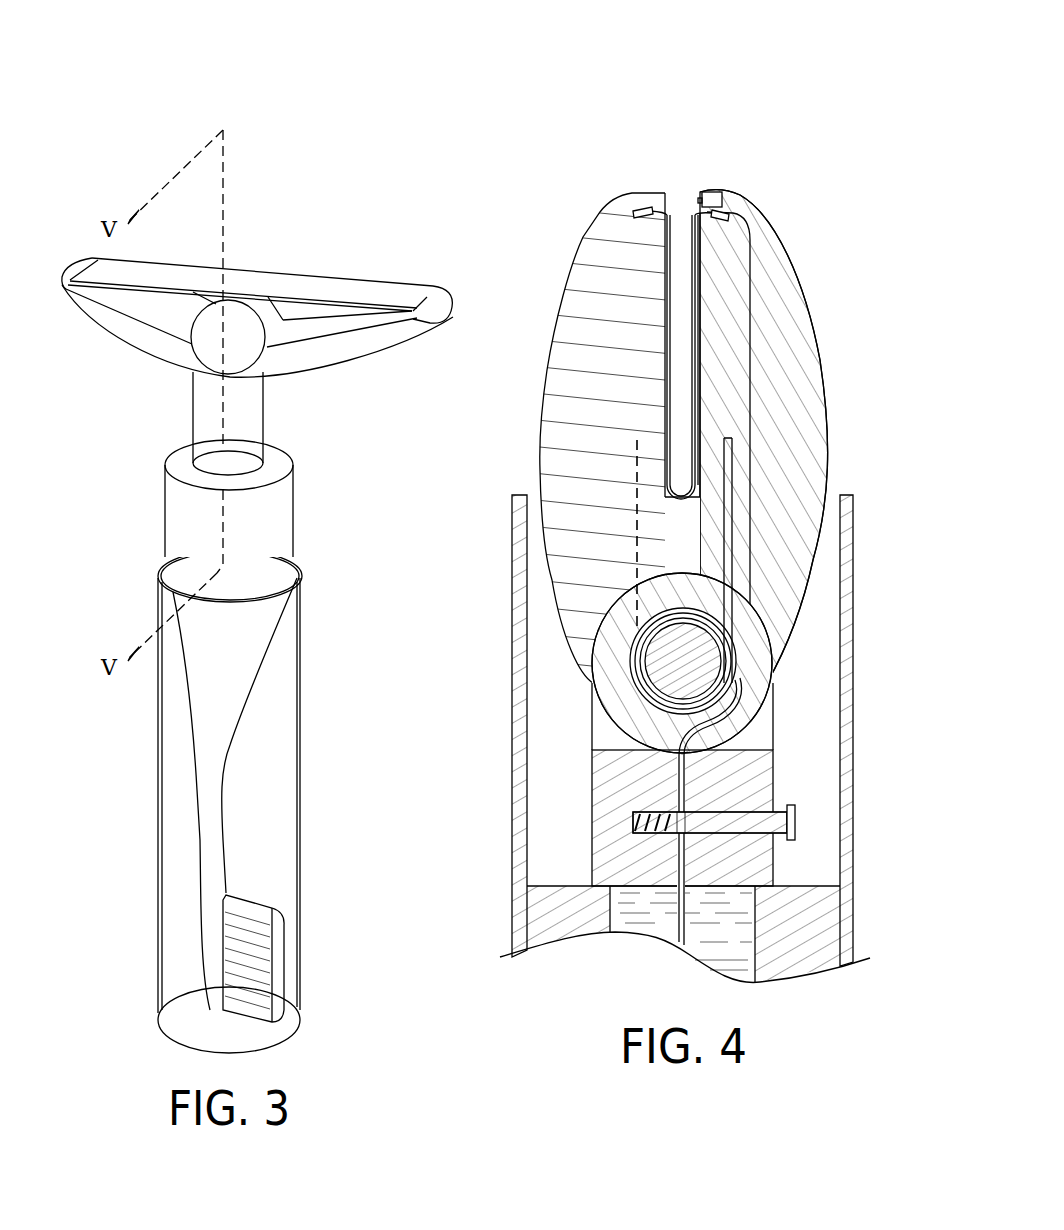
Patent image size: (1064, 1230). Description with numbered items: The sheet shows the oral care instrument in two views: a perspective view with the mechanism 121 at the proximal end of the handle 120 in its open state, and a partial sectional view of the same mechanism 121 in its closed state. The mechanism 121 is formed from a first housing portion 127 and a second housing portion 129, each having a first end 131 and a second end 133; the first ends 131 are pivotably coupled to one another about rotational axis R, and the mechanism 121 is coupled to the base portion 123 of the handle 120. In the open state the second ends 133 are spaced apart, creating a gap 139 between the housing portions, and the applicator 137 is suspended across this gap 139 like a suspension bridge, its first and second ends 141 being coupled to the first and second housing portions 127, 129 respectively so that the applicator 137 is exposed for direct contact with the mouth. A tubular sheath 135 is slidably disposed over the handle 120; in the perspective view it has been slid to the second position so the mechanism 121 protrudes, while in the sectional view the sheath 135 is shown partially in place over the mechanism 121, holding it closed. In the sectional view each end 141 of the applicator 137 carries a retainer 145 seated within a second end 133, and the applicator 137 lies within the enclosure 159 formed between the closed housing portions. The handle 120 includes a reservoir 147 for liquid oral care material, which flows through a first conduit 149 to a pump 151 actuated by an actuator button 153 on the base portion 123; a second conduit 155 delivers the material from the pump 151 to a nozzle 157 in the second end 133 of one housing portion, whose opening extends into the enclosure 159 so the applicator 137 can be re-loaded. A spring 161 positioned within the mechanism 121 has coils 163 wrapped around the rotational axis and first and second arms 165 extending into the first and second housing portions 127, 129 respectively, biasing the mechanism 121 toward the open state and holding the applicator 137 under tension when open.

In FIG. 3, the handle 120 is at (158, 573).
In FIG. 3, the mechanism 121 is at (150, 352).
In FIG. 4, the mechanism 121 is at (810, 312).
In FIG. 3, the base portion 123 is at (190, 417).
In FIG. 4, the base portion 123 is at (797, 817).
In FIG. 3, the first housing portion 127 is at (342, 353).
In FIG. 4, the first housing portion 127 is at (813, 395).
In FIG. 3, the second housing portion 129 is at (127, 328).
In FIG. 4, the second housing portion 129 is at (562, 407).
In FIG. 3, the first end 131 is at (277, 367).
In FIG. 3, the second end 133 is at (72, 263).
In FIG. 4, the second end 133 is at (753, 198).
In FIG. 3, the tubular sheath 135 is at (157, 608).
In FIG. 4, the tubular sheath 135 is at (847, 610).
In FIG. 3, the applicator 137 is at (343, 287).
In FIG. 3, the gap 139 is at (290, 307).
In FIG. 3, the first and second ends 141 is at (410, 290).
In FIG. 4, the first and second ends 141 is at (660, 213).
In FIG. 4, the retainer 145 is at (638, 210).
In FIG. 4, the reservoir 147 is at (747, 907).
In FIG. 4, the first conduit 149 is at (677, 863).
In FIG. 4, the pump 151 is at (683, 818).
In FIG. 4, the actuator button 153 is at (777, 862).
In FIG. 4, the second conduit 155 is at (755, 508).
In FIG. 4, the nozzle 157 is at (708, 195).
In FIG. 4, the enclosure 159 is at (683, 200).
In FIG. 4, the spring 161 is at (733, 468).
In FIG. 4, the coils 163 is at (745, 690).
In FIG. 4, the first and second arms 165 is at (755, 562).